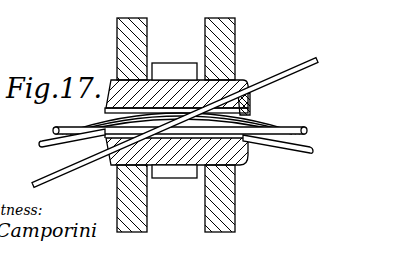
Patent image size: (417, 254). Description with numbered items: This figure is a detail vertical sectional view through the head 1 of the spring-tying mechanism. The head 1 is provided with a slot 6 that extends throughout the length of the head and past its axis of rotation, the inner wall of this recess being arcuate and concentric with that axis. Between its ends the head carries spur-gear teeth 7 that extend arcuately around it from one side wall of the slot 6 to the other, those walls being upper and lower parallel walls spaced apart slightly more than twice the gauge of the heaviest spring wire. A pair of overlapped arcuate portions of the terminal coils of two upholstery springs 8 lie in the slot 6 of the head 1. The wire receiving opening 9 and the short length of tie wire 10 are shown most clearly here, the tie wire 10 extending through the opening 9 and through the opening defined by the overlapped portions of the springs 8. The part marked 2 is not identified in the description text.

The head 1 is at (107, 86).
The clamping posts 2 is at (203, 19).
The slot 6 is at (252, 112).
The spur-gear teeth 7 is at (166, 180).
The springs 8 is at (307, 131).
The wire receiving opening 9 is at (240, 82).
The tie wire 10 is at (317, 60).